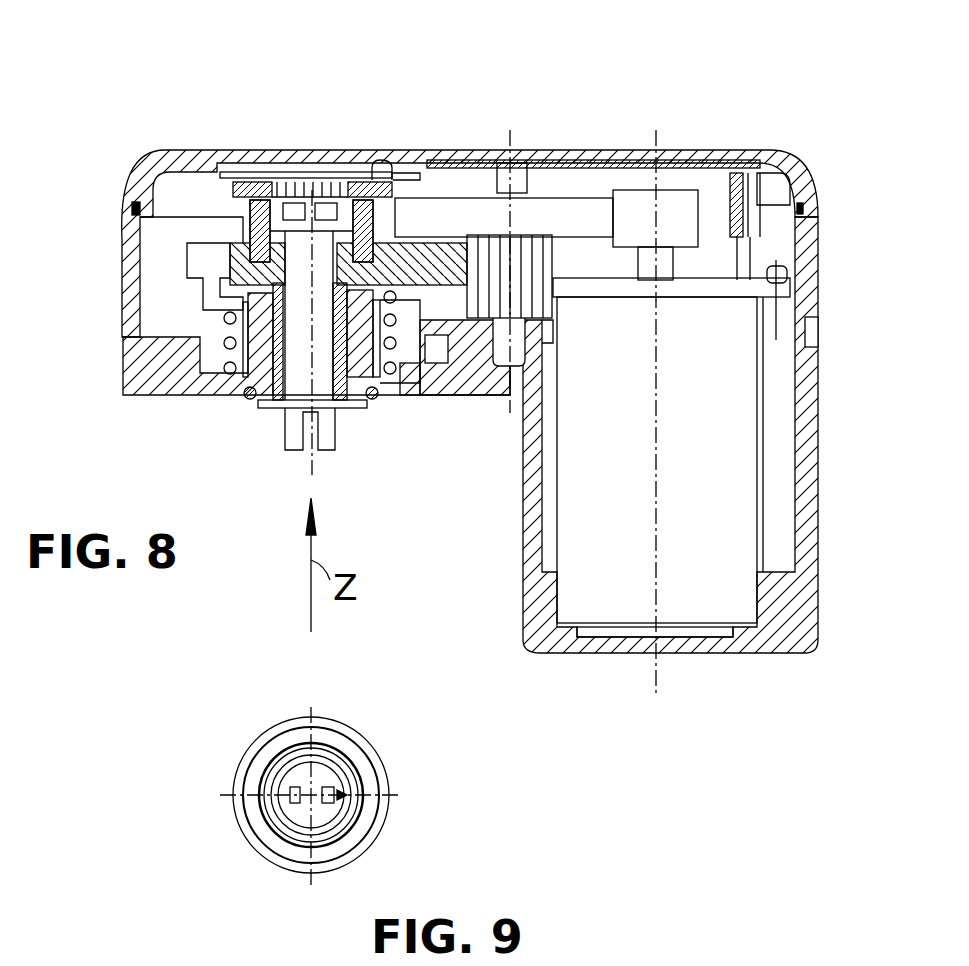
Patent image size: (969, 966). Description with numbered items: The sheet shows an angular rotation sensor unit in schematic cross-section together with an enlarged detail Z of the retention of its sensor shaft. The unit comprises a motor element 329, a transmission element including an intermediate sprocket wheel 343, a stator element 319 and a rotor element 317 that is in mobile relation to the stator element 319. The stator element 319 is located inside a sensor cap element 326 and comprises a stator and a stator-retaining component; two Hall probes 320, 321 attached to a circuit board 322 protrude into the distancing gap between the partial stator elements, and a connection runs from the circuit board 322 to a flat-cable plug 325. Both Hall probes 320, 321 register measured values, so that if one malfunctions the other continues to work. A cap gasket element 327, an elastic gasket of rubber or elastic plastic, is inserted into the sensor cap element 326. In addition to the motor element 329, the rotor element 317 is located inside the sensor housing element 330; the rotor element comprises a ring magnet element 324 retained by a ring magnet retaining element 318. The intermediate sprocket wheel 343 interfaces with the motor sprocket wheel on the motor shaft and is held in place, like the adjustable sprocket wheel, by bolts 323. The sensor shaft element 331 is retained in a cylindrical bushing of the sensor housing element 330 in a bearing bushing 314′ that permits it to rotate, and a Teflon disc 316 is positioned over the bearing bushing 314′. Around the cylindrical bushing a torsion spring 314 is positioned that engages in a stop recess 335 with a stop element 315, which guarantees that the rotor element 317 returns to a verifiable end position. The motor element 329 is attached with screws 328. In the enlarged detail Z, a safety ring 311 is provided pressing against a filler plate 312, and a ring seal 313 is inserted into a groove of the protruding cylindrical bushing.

In FIG. 9, the safety ring 311 is at (258, 773).
In FIG. 8, the filler plate 312 is at (275, 407).
In FIG. 8, the ring seal 313 is at (247, 397).
In FIG. 8, the torsion spring 314 is at (226, 316).
In FIG. 8, the bearing bushing 314′ is at (275, 358).
In FIG. 8, the stop element 315 is at (185, 262).
In FIG. 8, the Teflon disc 316 is at (243, 240).
In FIG. 8, the rotor element 317 is at (190, 232).
In FIG. 8, the ring magnet retaining element 318 is at (222, 232).
In FIG. 8, the stator element 319 is at (380, 175).
In FIG. 8, the Hall probe 320 is at (293, 203).
In FIG. 8, the Hall probe 321 is at (327, 203).
In FIG. 8, the circuit board 322 is at (373, 162).
In FIG. 8, the bolt 323 is at (520, 160).
In FIG. 8, the ring magnet element 324 is at (218, 238).
In FIG. 8, the flat-cable plug 325 is at (717, 173).
In FIG. 8, the sensor cap element 326 is at (813, 197).
In FIG. 8, the cap gasket element 327 is at (805, 205).
In FIG. 8, the screw 328 is at (783, 267).
In FIG. 8, the motor element 329 is at (720, 440).
In FIG. 8, the sensor housing element 330 is at (787, 600).
In FIG. 8, the sensor shaft element 331 is at (318, 440).
In FIG. 9, the sensor shaft element 331 is at (337, 787).
In FIG. 8, the stop recess 335 is at (200, 267).
In FIG. 8, the intermediate sprocket wheel 343 is at (565, 200).